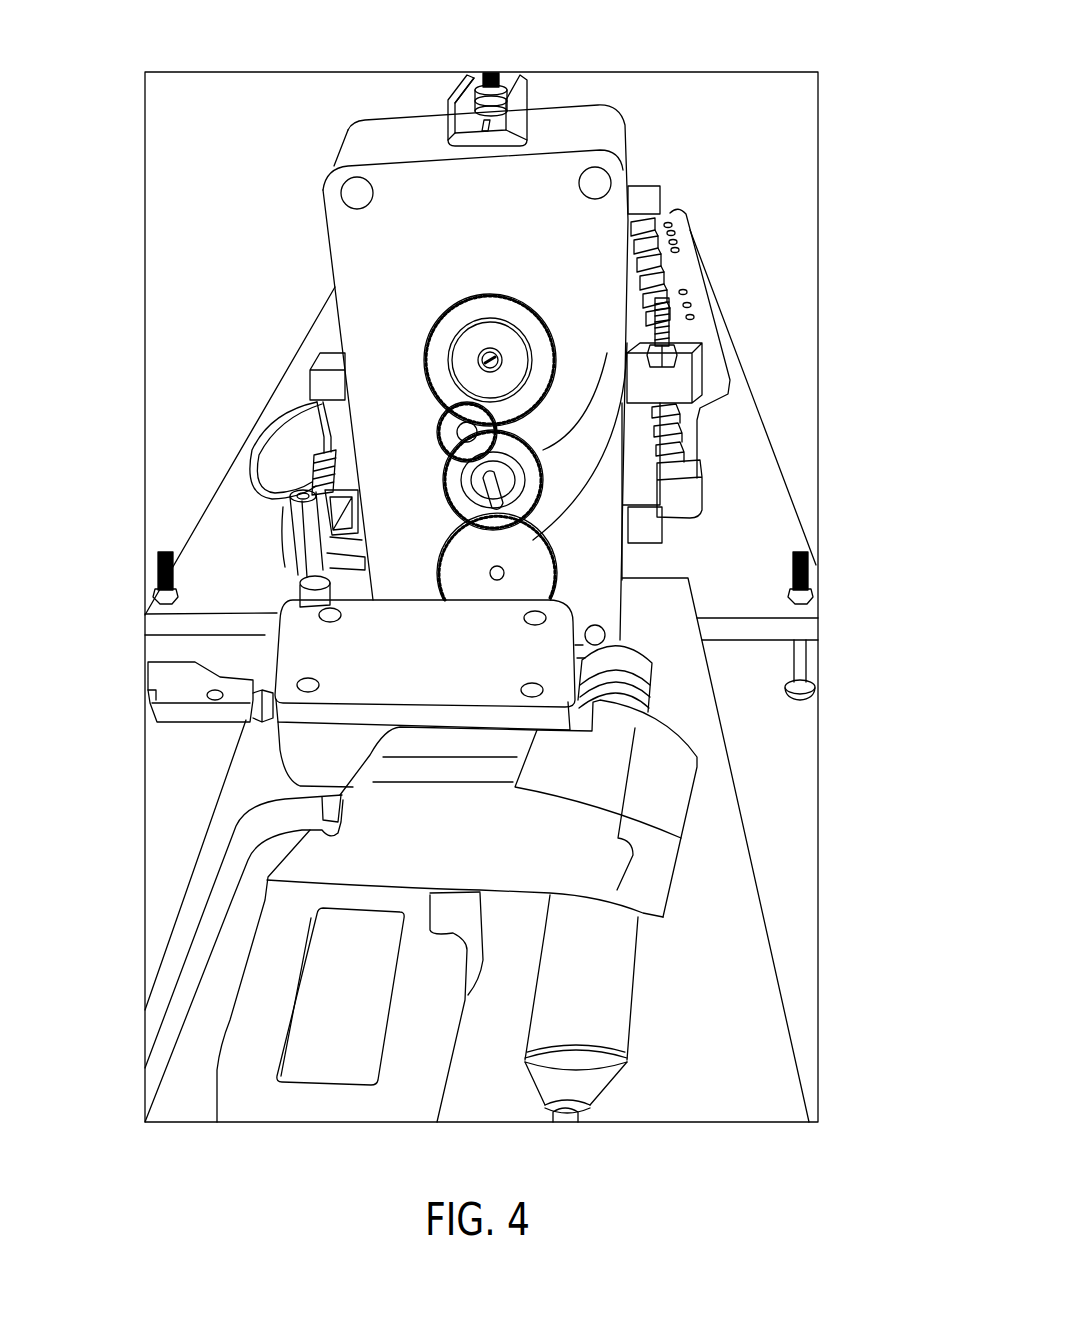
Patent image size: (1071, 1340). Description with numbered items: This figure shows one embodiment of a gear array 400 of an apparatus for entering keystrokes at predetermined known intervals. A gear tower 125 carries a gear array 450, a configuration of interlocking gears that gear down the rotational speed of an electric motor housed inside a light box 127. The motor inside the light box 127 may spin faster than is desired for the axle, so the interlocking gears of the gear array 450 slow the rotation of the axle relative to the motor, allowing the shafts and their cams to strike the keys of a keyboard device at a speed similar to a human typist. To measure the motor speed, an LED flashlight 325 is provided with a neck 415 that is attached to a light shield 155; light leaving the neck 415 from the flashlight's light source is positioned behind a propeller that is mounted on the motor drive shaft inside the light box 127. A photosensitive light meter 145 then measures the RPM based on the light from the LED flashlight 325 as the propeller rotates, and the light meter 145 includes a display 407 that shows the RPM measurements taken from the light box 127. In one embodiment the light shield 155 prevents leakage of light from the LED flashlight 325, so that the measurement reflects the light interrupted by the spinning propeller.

The gear array 400 is at (787, 58).
The gear tower 125 is at (617, 195).
The gear array 450 is at (517, 357).
The light box 127 is at (507, 652).
The light shield 155 is at (550, 830).
The neck 415 is at (192, 968).
The light meter 145 is at (265, 1098).
The display 407 is at (340, 1037).
The LED flashlight 325 is at (597, 1017).